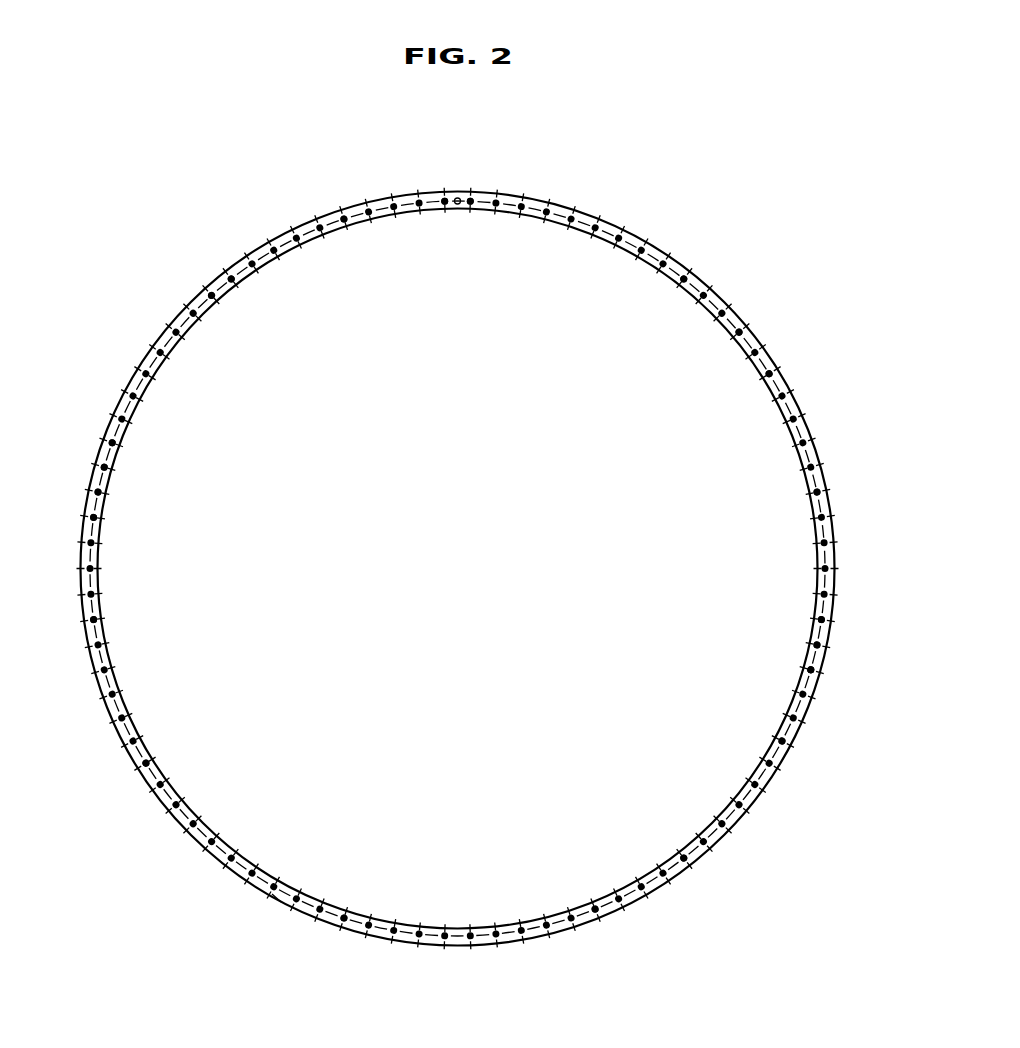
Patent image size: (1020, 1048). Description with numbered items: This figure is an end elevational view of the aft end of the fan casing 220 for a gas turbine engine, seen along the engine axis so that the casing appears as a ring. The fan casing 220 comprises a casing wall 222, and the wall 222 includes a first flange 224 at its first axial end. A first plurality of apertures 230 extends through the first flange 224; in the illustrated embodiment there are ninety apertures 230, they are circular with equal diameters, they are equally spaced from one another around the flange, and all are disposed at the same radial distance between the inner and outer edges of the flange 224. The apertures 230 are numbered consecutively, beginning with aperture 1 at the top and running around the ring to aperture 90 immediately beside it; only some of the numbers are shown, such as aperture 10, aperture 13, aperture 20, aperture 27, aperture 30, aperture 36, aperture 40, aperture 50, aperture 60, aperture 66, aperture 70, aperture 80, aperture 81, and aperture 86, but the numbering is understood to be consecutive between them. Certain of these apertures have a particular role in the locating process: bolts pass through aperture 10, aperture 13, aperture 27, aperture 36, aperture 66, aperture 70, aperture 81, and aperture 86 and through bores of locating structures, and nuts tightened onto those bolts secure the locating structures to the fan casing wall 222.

The fan casing 220 is at (176, 110).
The aperture number 1 is at (471, 200).
The aperture number 90 is at (444, 201).
The aperture number 86 is at (344, 219).
The aperture number 80 is at (210, 284).
The aperture number 81 is at (231, 279).
The aperture number 10 is at (684, 279).
The aperture number 13 is at (740, 330).
The casing wall 222 is at (766, 391).
The aperture number 20 is at (819, 491).
The first plurality of apertures 230 is at (811, 670).
The aperture number 27 is at (812, 671).
The aperture number 30 is at (782, 742).
The aperture number 36 is at (694, 860).
The aperture number 40 is at (595, 910).
The aperture number 50 is at (344, 918).
The first flange 224 is at (281, 902).
The aperture number 60 is at (146, 764).
The aperture number 66 is at (90, 620).
The aperture number 70 is at (85, 513).